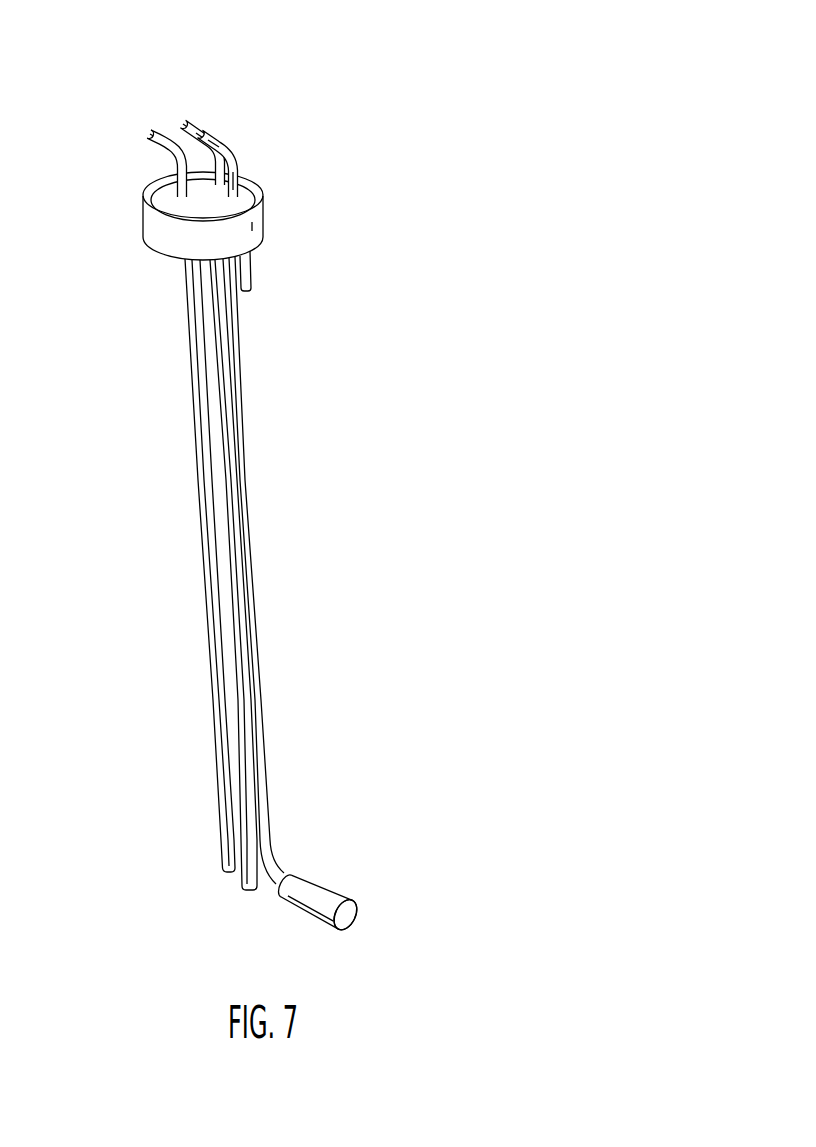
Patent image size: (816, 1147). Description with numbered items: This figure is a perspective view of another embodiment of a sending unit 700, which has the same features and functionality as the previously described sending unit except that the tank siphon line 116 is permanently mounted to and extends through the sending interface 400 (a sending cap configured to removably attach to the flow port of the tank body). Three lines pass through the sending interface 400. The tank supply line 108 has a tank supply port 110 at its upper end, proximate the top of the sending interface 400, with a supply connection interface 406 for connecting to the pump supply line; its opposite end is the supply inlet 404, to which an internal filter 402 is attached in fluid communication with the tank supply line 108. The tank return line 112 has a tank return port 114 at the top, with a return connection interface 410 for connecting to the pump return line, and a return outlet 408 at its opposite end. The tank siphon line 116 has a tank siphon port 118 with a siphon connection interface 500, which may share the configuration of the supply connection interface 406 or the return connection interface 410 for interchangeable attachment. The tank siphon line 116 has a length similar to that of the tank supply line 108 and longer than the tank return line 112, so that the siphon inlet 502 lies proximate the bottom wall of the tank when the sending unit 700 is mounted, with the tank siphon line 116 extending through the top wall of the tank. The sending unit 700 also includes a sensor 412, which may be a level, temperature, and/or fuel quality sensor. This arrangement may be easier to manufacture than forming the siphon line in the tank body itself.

The sending unit 700 is at (373, 77).
The sending interface 400 is at (264, 208).
The internal filter 402 is at (308, 880).
The supply inlet 404 is at (351, 913).
The supply connection interface 406 is at (177, 121).
The return outlet 408 is at (248, 292).
The return connection interface 410 is at (182, 130).
The sensor 412 is at (253, 892).
The siphon connection interface 500 is at (143, 140).
The siphon inlet 502 is at (228, 874).
The tank supply line 108 is at (204, 128).
The tank supply port 110 is at (203, 120).
The tank return line 112 is at (216, 135).
The tank return port 114 is at (239, 163).
The tank siphon line 116 is at (145, 133).
The tank siphon port 118 is at (157, 150).